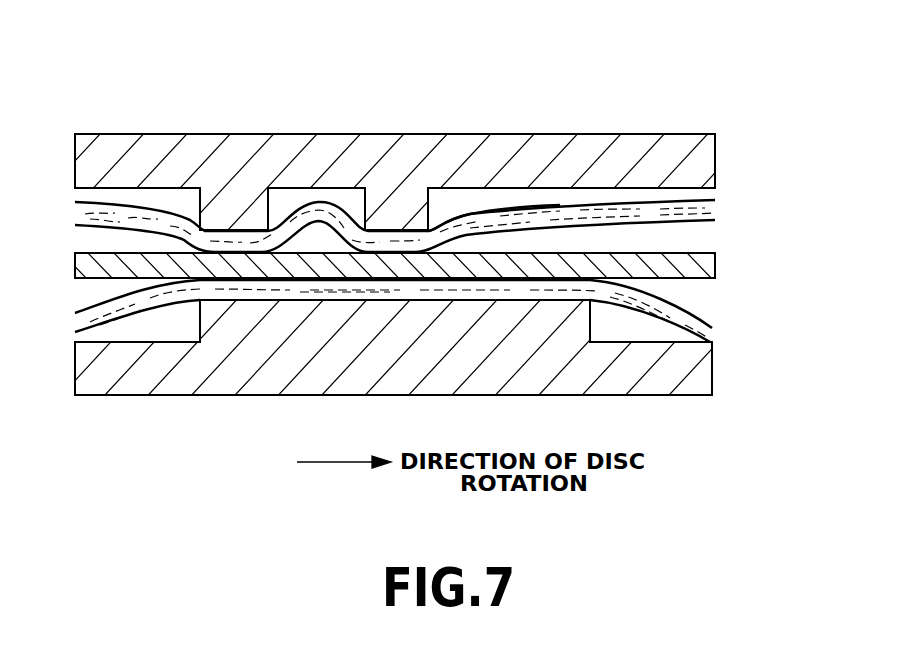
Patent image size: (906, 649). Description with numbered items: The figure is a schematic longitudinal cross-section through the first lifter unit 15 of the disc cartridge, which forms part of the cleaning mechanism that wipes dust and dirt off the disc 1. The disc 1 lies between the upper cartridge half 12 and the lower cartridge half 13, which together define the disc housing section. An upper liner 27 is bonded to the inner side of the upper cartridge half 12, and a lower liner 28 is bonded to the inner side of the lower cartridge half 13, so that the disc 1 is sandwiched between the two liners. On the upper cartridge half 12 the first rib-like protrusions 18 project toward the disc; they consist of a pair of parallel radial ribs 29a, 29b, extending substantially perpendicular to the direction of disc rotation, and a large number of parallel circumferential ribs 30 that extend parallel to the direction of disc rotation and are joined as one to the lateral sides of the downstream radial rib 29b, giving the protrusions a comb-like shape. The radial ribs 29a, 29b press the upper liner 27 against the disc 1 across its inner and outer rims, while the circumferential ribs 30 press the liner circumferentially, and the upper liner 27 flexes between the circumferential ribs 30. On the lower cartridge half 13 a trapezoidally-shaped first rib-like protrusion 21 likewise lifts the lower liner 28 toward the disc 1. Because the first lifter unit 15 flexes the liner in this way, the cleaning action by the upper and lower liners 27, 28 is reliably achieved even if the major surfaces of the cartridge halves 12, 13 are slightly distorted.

The first lifter unit 15 is at (198, 106).
The first rib-like protrusions 18 is at (272, 64).
The radial rib 29a is at (270, 200).
The radial rib 29b is at (432, 212).
The circumferential ribs 30 is at (529, 242).
The upper cartridge half 12 is at (592, 147).
The upper liner 27 is at (713, 205).
The disc 1 is at (700, 272).
The lower liner 28 is at (700, 320).
The lower cartridge half 13 is at (665, 377).
The first rib-like protrusion 21 is at (197, 322).